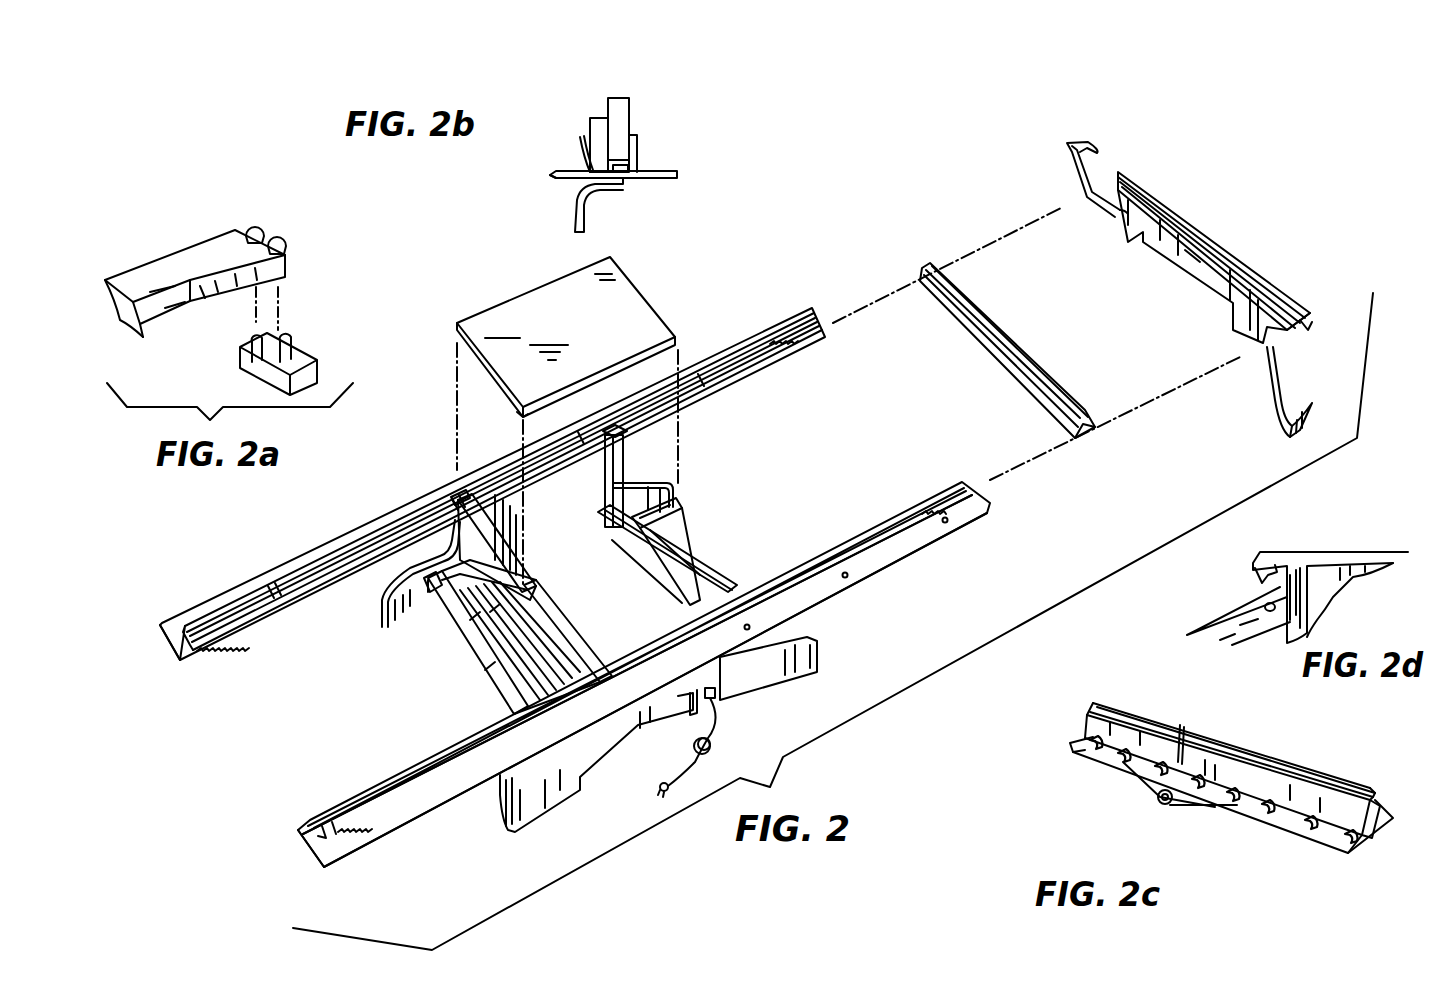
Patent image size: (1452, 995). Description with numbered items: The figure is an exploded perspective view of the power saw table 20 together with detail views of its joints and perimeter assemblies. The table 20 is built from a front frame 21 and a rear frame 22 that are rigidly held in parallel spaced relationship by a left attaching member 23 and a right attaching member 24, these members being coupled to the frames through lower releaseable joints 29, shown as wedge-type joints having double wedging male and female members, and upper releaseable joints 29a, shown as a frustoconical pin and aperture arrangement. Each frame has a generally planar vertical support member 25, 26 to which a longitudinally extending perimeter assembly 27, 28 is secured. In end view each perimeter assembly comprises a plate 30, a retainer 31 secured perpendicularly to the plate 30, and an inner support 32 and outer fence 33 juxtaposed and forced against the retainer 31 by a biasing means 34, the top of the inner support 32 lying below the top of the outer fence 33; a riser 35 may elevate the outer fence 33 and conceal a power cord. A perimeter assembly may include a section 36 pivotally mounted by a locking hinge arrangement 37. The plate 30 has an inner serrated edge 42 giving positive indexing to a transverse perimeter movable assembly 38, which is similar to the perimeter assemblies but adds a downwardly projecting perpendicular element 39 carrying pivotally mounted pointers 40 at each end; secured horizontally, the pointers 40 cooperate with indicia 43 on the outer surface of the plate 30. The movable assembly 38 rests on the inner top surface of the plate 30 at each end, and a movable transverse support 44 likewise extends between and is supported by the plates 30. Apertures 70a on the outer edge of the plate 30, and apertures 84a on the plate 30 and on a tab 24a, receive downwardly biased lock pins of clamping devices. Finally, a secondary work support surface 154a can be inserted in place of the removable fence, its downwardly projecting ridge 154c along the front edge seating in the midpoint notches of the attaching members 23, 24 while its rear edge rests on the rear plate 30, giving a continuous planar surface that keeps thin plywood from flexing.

In FIG. 2, the power saw table 20 is at (320, 788).
In FIG. 2, the front frame 21 is at (720, 705).
In FIG. 2, the rear frame 22 is at (380, 624).
In FIG. 2, the left attaching member 23 is at (503, 640).
In FIG. 2, the right attaching member 24 is at (710, 580).
In FIG. 2, the tab 24a is at (658, 484).
In FIG. 2b, the vertical support member 25 is at (583, 212).
In FIG. 2, the vertical support member 25 is at (662, 702).
In FIG. 2, the vertical support member 26 is at (530, 507).
In FIG. 2, the longitudinally extending assembly 27 is at (300, 860).
In FIG. 2, the longitudinally extending assembly 28 is at (165, 655).
In FIG. 2a, the lower releaseable joint 29 is at (293, 273).
In FIG. 2, the lower releaseable joint 29 is at (435, 598).
In FIG. 2d, the upper releaseable joint 29a is at (1247, 565).
In FIG. 2, the upper releaseable joint 29a is at (463, 483).
In FIG. 2b, the plate 30 is at (662, 170).
In FIG. 2, the plate 30 is at (400, 510).
In FIG. 2b, the retainer 31 is at (638, 150).
In FIG. 2b, the inner support 32 is at (597, 118).
In FIG. 2b, the outer fence 33 is at (632, 70).
In FIG. 2b, the biasing means 34 is at (580, 146).
In FIG. 2b, the riser 35 is at (625, 168).
In FIG. 2c, the section 36 is at (1286, 833).
In FIG. 2c, the locking hinge arrangement 37 is at (1160, 803).
In FIG. 2, the transverse perimeter movable assembly 38 is at (1213, 232).
In FIG. 2, the perpendicular element 39 is at (1173, 262).
In FIG. 2, the pointer 40 is at (1067, 148).
In FIG. 2b, the inner serrated edge 42 is at (550, 178).
In FIG. 2, the inner serrated edge 42 is at (633, 430).
In FIG. 2, the indicia 43 is at (897, 557).
In FIG. 2, the movable transverse support 44 is at (1043, 313).
In FIG. 2, the apertures 70a is at (750, 630).
In FIG. 2, the apertures 84a is at (672, 508).
In FIG. 2, the secondary work support surface 154a is at (590, 324).
In FIG. 2, the downwardly projecting ridge 154c is at (520, 417).